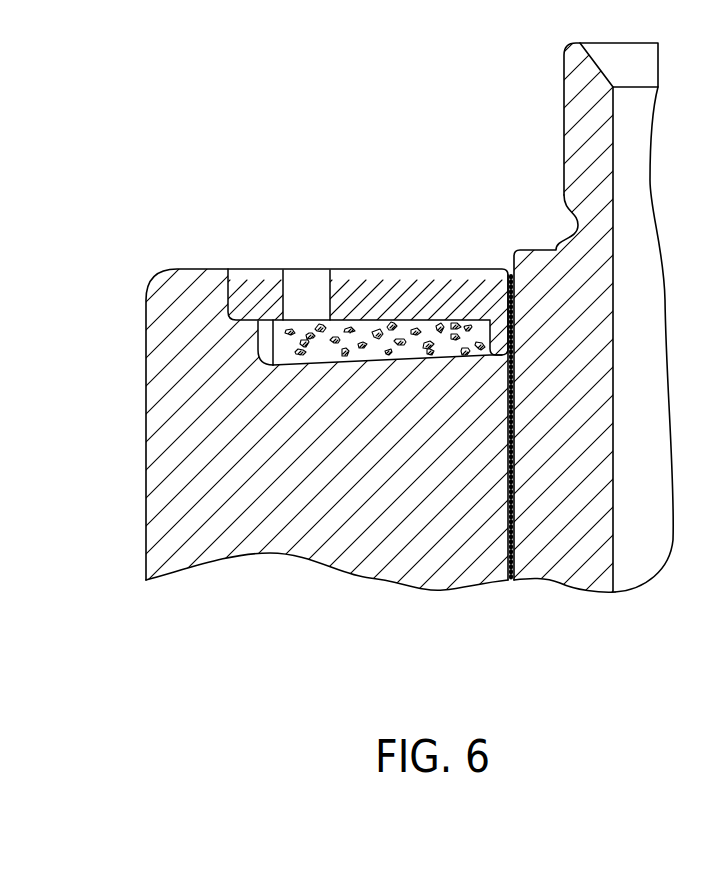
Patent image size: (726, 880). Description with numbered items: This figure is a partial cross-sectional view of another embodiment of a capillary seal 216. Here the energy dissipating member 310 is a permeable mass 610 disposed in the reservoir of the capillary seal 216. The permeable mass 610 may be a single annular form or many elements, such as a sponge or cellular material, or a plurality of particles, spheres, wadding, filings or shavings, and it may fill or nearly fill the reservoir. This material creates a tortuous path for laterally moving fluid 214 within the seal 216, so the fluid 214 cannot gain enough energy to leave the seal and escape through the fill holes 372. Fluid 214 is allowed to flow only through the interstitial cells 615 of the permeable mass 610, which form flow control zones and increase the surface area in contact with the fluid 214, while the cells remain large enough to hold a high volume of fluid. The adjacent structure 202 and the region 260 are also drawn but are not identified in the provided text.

The capillary seal 216 is at (92, 276).
The wall member 202 is at (616, 285).
The fluid 214 is at (410, 342).
The fill holes 372 is at (309, 255).
The particulate material 260 is at (427, 320).
The energy dissipating member 310 is at (261, 340).
The permeable mass 610 is at (260, 353).
The interstitial cells 615 is at (403, 372).